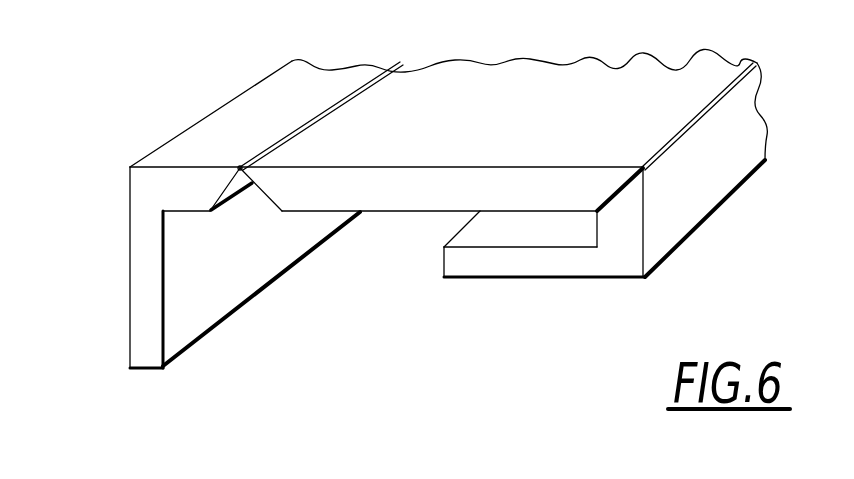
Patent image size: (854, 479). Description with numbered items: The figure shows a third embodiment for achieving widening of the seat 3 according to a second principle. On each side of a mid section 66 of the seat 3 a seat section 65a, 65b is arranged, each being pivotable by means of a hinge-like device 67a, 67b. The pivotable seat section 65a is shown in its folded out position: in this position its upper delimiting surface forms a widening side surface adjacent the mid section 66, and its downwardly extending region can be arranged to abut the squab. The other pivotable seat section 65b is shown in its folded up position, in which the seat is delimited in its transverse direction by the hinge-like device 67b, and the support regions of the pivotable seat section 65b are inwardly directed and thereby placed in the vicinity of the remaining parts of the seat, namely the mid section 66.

The seat section 3 is at (214, 86).
The mid section 66 is at (398, 212).
The hinge-like device 67a is at (240, 166).
The hinge-like device 67b is at (645, 168).
The seat section 65a is at (147, 323).
The seat section 65b is at (600, 265).